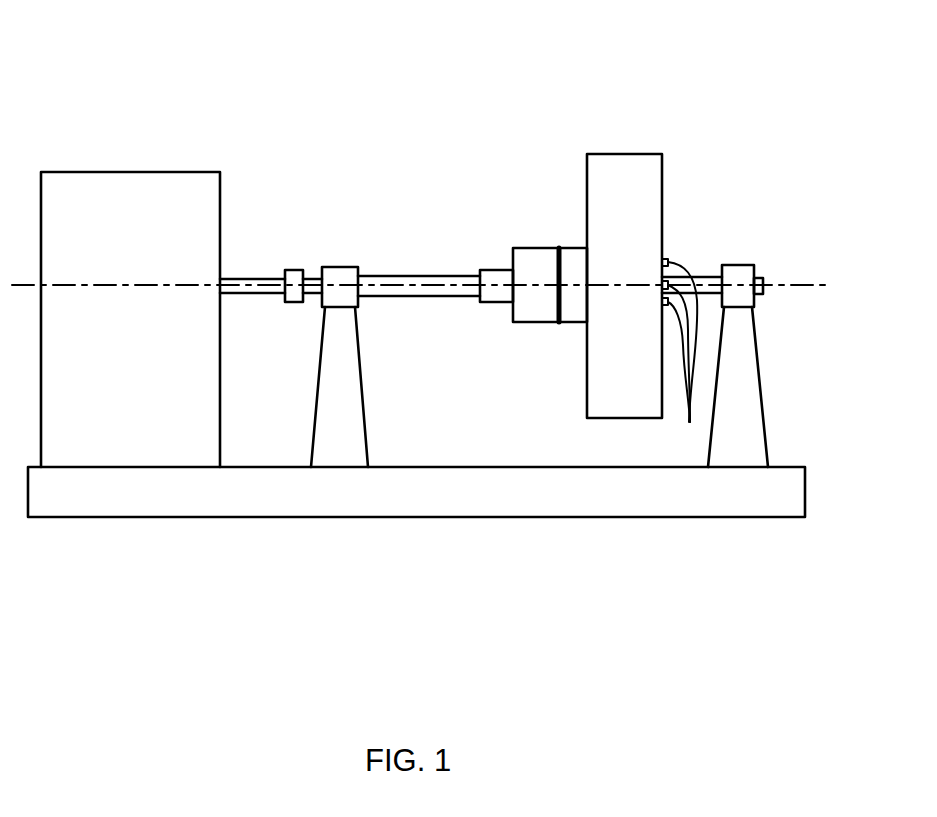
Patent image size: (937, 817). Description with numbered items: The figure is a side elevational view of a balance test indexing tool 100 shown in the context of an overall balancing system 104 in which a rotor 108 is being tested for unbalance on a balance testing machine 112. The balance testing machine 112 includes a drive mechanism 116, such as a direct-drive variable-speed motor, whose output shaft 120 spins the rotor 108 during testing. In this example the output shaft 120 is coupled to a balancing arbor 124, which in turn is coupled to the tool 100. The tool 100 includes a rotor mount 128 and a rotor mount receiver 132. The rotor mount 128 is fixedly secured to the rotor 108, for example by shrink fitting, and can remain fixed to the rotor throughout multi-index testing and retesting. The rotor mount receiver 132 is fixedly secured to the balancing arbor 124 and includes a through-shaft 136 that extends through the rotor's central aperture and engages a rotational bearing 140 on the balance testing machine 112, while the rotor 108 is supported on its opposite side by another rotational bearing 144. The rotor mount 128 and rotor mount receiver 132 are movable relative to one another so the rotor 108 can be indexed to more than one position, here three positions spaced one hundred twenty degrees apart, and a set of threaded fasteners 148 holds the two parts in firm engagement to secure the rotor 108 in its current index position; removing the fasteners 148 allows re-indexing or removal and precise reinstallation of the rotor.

The balance test indexing tool 100 is at (543, 225).
The balancing system 104 is at (721, 130).
The rotor 108 is at (628, 153).
The balance testing machine 112 is at (130, 519).
The drive mechanism 116 is at (144, 172).
The output shaft 120 is at (244, 280).
The balancing arbor 124 is at (456, 297).
The rotor mount 128 is at (575, 247).
The rotor mount receiver 132 is at (525, 247).
The through-shaft 136 is at (702, 284).
The rotational bearing 140 is at (756, 270).
The rotational bearing 144 is at (337, 266).
The threaded fasteners 148 is at (682, 354).